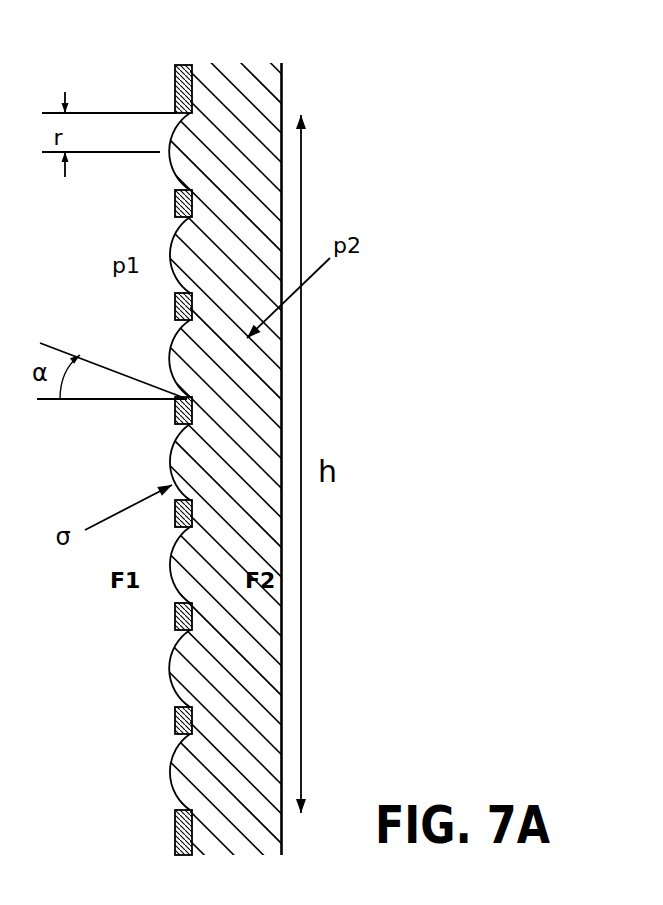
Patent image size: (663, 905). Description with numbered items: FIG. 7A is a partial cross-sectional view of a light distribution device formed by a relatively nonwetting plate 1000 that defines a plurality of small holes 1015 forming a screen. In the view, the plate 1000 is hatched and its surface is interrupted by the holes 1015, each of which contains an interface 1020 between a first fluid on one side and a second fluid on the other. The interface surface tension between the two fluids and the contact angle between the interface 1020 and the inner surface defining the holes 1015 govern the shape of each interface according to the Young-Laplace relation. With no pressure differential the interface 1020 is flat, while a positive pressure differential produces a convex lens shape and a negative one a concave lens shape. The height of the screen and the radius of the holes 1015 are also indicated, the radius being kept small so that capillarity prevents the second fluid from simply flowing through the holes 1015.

The relatively nonwetting plate 1000 is at (372, 94).
The interface 1020 is at (168, 667).
The holes 1015 is at (175, 810).